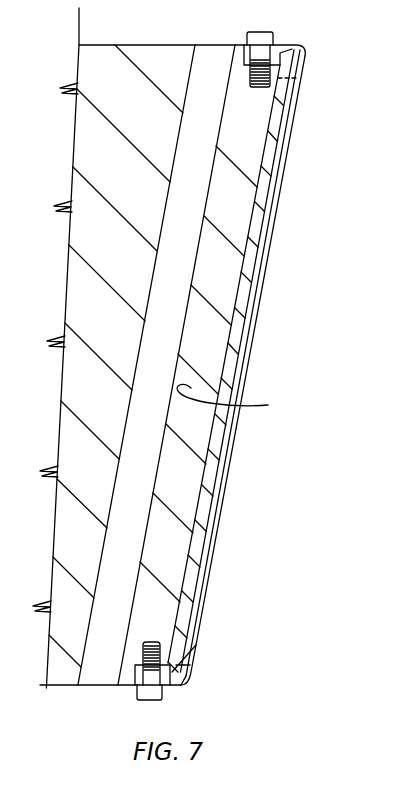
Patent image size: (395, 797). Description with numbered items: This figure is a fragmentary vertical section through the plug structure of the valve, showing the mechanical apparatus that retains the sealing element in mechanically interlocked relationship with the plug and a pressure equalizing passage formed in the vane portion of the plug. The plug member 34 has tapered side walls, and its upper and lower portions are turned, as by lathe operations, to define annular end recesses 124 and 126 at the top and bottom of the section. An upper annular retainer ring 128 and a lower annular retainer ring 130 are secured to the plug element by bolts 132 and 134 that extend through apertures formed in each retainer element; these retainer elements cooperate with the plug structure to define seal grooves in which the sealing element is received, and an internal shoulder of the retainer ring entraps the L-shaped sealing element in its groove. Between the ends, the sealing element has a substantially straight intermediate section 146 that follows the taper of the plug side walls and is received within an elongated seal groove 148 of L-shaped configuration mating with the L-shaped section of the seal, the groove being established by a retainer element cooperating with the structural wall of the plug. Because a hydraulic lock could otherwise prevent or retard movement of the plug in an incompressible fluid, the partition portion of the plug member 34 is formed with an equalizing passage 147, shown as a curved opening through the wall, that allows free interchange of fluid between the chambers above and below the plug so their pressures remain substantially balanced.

The plug member 34 is at (143, 67).
The upper annular end recess 124 is at (285, 57).
The lower annular end recess 126 is at (178, 686).
The upper annular retainer ring 128 is at (296, 57).
The lower annular retainer ring 130 is at (188, 672).
The bolt 132 is at (258, 33).
The bolt 134 is at (147, 697).
The intermediate section of sealing element 146 is at (262, 303).
The equalizing passage 147 is at (242, 401).
The elongated seal groove 148 is at (243, 266).